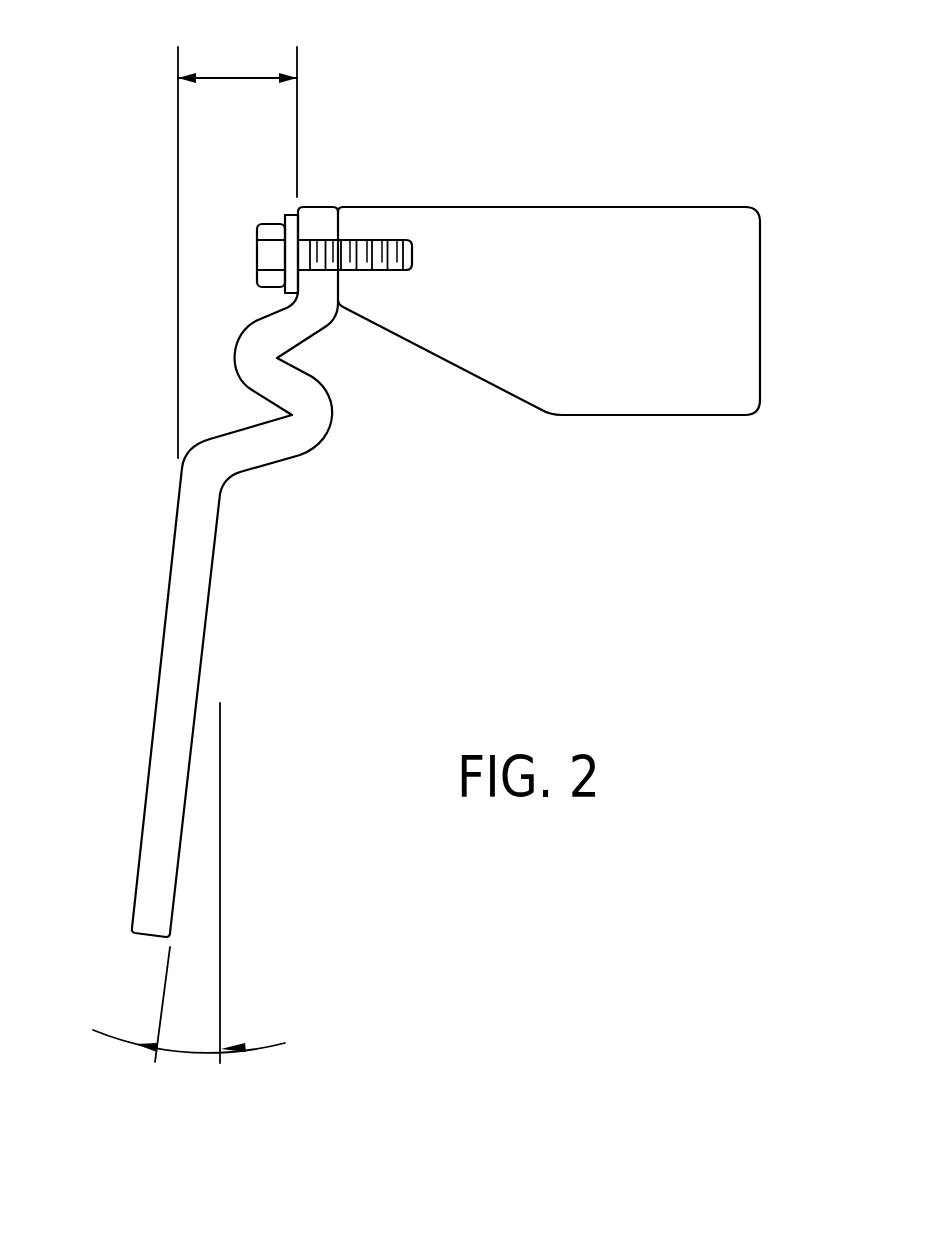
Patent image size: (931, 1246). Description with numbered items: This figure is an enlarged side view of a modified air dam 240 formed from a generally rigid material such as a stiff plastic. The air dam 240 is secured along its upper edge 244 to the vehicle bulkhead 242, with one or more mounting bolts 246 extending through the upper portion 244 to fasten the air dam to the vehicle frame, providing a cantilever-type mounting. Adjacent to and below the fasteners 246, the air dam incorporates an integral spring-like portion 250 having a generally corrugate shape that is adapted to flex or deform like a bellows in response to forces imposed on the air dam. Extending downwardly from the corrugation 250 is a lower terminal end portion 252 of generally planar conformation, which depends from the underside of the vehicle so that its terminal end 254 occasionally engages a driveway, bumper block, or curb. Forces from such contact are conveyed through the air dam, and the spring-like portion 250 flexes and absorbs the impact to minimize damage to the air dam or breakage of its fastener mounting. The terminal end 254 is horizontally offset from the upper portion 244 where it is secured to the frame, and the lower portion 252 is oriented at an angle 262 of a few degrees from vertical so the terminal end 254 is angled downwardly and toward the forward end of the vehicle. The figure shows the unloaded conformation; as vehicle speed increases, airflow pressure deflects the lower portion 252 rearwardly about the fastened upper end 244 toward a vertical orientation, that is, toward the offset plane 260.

The modified air dam 240 is at (146, 723).
The vehicle bulkhead 242 is at (445, 215).
The upper edge 244 is at (314, 213).
The mounting bolt 246 is at (270, 232).
The spring-like portion 250 is at (324, 422).
The lower terminal end portion 252 is at (187, 664).
The terminal end 254 is at (150, 938).
The offset plane 260 is at (232, 77).
The angle 262 is at (185, 1053).